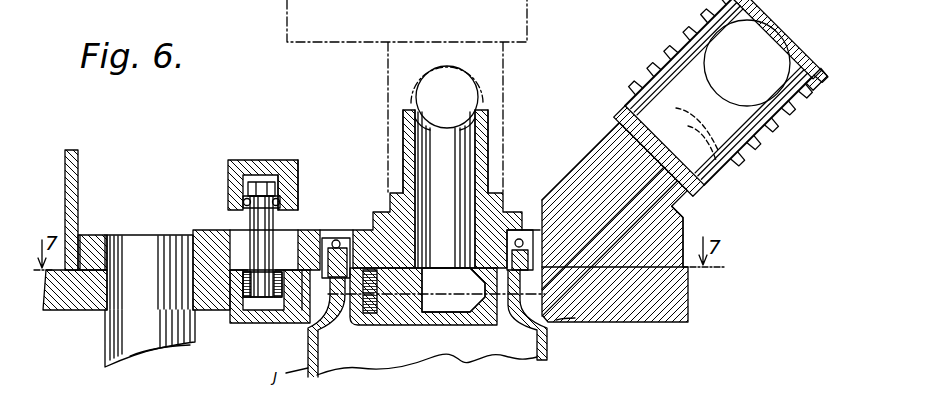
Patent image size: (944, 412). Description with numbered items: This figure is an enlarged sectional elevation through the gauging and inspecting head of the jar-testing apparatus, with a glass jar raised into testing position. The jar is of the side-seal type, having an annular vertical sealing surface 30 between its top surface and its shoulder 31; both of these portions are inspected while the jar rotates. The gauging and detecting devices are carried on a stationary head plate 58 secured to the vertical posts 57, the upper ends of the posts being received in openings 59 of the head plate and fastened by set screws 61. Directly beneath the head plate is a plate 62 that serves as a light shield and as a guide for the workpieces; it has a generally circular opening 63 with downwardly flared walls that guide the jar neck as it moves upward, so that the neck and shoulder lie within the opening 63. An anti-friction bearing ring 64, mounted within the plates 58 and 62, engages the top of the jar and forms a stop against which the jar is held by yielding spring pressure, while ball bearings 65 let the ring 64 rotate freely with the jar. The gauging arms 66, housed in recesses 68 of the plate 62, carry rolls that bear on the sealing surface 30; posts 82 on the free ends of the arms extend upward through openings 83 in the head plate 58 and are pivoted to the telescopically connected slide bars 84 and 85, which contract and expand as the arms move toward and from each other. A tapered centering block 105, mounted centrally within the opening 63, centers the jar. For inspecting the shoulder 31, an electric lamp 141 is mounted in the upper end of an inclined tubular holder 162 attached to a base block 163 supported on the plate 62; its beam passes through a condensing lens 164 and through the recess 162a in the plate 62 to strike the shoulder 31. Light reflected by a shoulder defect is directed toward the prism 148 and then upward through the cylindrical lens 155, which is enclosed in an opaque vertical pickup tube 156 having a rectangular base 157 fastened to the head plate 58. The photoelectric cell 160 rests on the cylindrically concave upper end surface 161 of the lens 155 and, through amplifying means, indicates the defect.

The sealing surface 30 is at (328, 307).
The shoulder 31 is at (550, 322).
The vertical posts 57 is at (108, 330).
The head plate 58 is at (205, 230).
The openings 59 is at (178, 242).
The set screws 61 is at (90, 243).
The plate 62 is at (678, 293).
The opening 63 is at (558, 322).
The anti-friction bearing ring 64 is at (345, 238).
The ball bearings 65 is at (525, 230).
The gauging arms 66 is at (290, 286).
The recesses 68 is at (255, 303).
The posts 82 is at (267, 221).
The openings 83 is at (242, 222).
The slide bar 84 is at (265, 160).
The slide bar 85 is at (290, 173).
The centering block 105 is at (397, 303).
The electric lamp 141 is at (738, 60).
The prism 148 is at (455, 300).
The cylindrical lens 155 is at (452, 163).
The pickup tube 156 is at (490, 128).
The rectangular base 157 is at (373, 198).
The photoelectric cell 160 is at (482, 77).
The upper end surface 161 is at (447, 128).
The tubular holder 162 is at (770, 125).
The recess 162a is at (542, 278).
The base block 163 is at (673, 223).
The condensing lens 164 is at (636, 107).